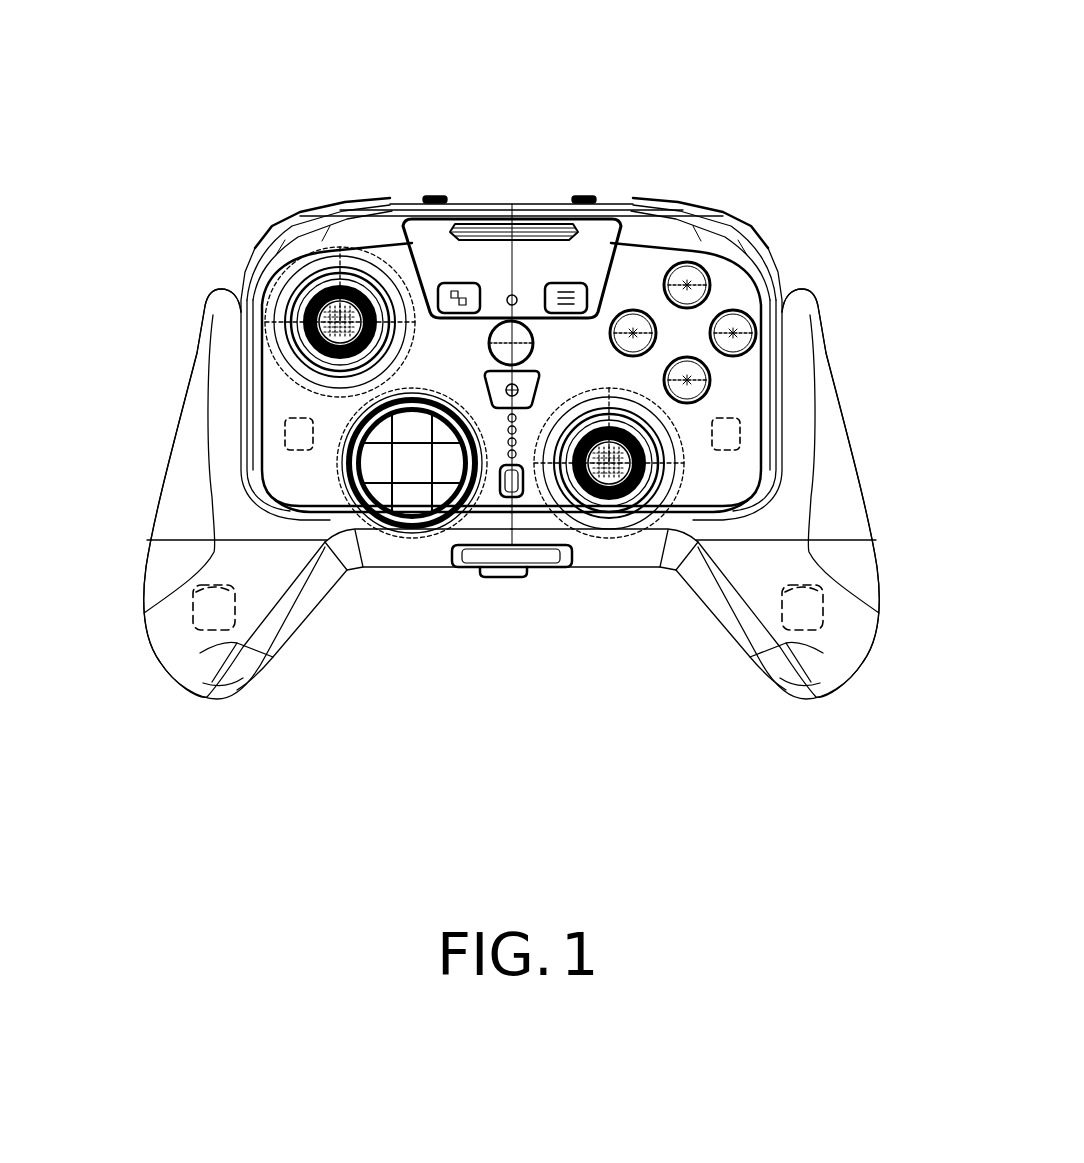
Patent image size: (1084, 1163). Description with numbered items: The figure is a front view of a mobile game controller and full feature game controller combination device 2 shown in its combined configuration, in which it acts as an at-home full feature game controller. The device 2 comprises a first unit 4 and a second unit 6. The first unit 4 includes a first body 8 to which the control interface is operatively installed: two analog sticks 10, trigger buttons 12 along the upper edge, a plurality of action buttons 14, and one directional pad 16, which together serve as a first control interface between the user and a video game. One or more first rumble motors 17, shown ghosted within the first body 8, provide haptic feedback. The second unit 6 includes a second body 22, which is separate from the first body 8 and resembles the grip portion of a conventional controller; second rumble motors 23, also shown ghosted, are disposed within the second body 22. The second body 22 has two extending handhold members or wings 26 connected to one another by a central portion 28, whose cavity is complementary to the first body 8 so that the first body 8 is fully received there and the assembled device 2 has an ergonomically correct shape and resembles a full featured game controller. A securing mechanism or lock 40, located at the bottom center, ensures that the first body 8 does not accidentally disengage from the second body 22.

The mobile game controller and full feature game controller combination device 2 is at (743, 137).
The first unit 4 is at (790, 232).
The second unit 6 is at (845, 344).
The first body 8 is at (403, 198).
The analog stick 10 is at (292, 282).
The trigger button 12 is at (313, 198).
The action button 14 is at (670, 262).
The directional pad 16 is at (407, 520).
The first rumble motor 17 is at (287, 432).
The second body 22 is at (782, 650).
The second rumble motor 23 is at (193, 615).
The wing 26 is at (162, 650).
The central portion 28 is at (590, 569).
The securing mechanism 40 is at (499, 580).